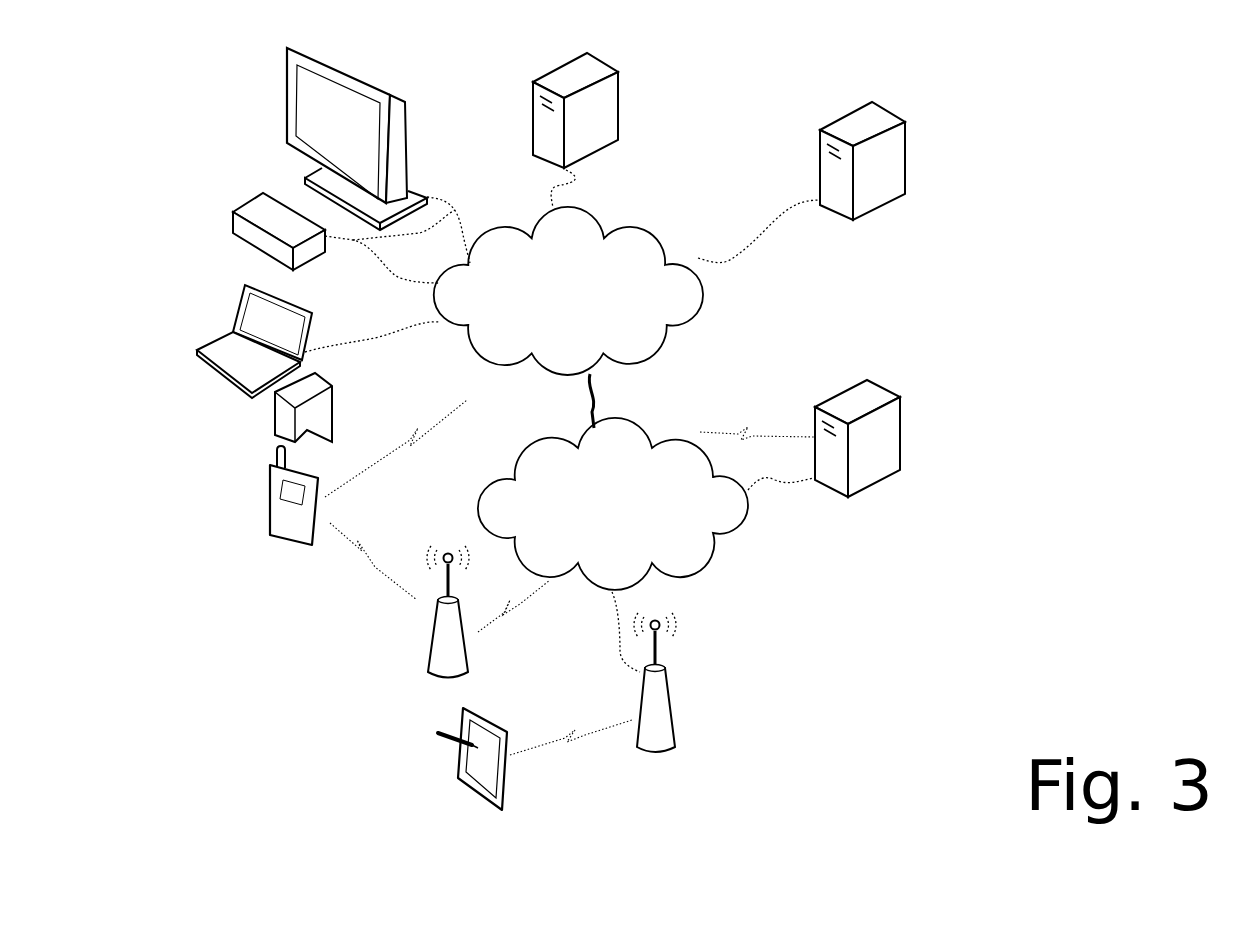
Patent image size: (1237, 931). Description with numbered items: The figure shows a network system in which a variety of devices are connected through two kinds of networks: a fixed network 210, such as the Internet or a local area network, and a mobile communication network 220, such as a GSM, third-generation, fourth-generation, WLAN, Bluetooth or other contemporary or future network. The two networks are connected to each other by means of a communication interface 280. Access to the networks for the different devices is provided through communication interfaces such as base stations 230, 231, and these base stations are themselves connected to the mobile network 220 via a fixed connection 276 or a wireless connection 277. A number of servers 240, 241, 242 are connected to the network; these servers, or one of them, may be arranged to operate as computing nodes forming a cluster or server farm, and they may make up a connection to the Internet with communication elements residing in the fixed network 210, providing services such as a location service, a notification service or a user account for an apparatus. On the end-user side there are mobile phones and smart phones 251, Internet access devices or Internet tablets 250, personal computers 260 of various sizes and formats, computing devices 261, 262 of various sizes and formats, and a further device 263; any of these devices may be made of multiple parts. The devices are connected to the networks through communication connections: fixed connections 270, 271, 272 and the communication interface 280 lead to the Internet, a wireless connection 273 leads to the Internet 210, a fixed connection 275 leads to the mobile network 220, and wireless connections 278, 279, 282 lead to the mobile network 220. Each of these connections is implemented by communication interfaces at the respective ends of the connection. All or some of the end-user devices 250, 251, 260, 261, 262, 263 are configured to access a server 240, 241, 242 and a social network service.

The fixed network 210 is at (683, 333).
The mobile communication network 220 is at (695, 572).
The base station 230 is at (427, 665).
The base station 231 is at (673, 697).
The server 240 is at (628, 85).
The server 241 is at (913, 142).
The server 242 is at (910, 417).
The Internet access device 250 is at (457, 780).
The mobile phone 251 is at (268, 503).
The personal computer 260 is at (230, 310).
The computing device 261 is at (270, 113).
The computing device 262 is at (248, 200).
The end-user device 263 is at (333, 378).
The fixed connection 270 is at (393, 315).
The fixed connection 271 is at (538, 193).
The fixed connection 272 is at (752, 233).
The wireless connection 273 is at (400, 430).
The fixed connection 275 is at (783, 480).
The fixed connection 276 is at (613, 653).
The wireless connection 277 is at (505, 625).
The wireless connection 278 is at (572, 757).
The wireless connection 279 is at (376, 557).
The communication interface 280 is at (600, 413).
The wireless connection 282 is at (717, 427).